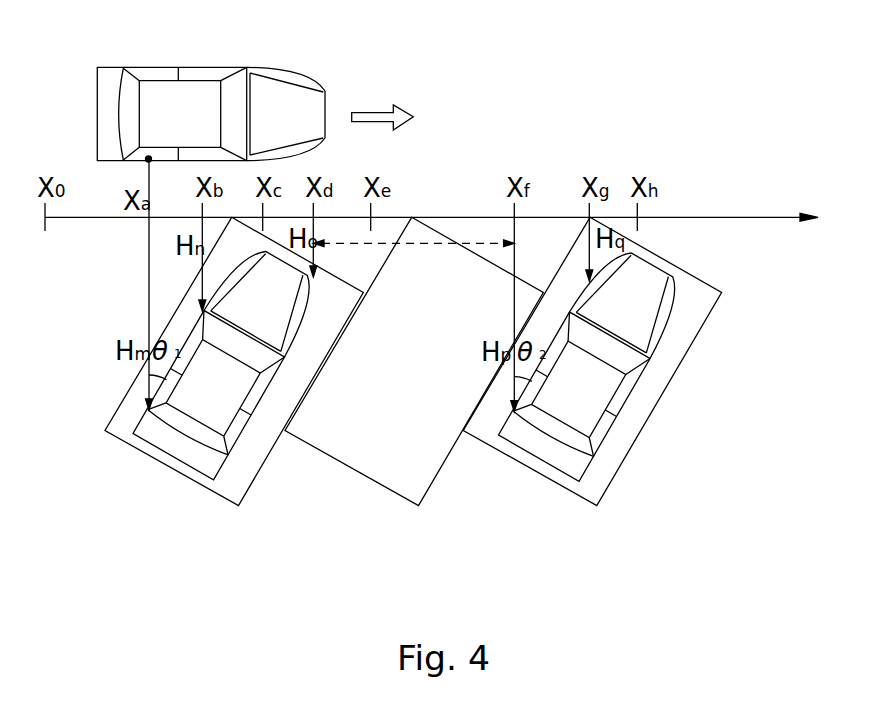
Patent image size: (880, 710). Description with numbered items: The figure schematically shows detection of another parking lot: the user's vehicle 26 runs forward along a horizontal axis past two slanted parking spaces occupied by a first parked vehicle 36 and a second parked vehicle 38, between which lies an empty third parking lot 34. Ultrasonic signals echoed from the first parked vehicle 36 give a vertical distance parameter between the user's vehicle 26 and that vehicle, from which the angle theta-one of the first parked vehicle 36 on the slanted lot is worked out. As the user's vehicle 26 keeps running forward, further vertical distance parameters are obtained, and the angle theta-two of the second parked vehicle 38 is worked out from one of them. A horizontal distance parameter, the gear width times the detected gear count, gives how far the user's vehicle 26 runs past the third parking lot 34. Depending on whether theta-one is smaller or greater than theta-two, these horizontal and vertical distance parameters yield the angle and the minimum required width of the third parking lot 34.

The user's vehicle 26 is at (203, 77).
The third parking lot 34 is at (387, 460).
The first parked vehicle 36 is at (195, 455).
The second parked vehicle 38 is at (552, 450).